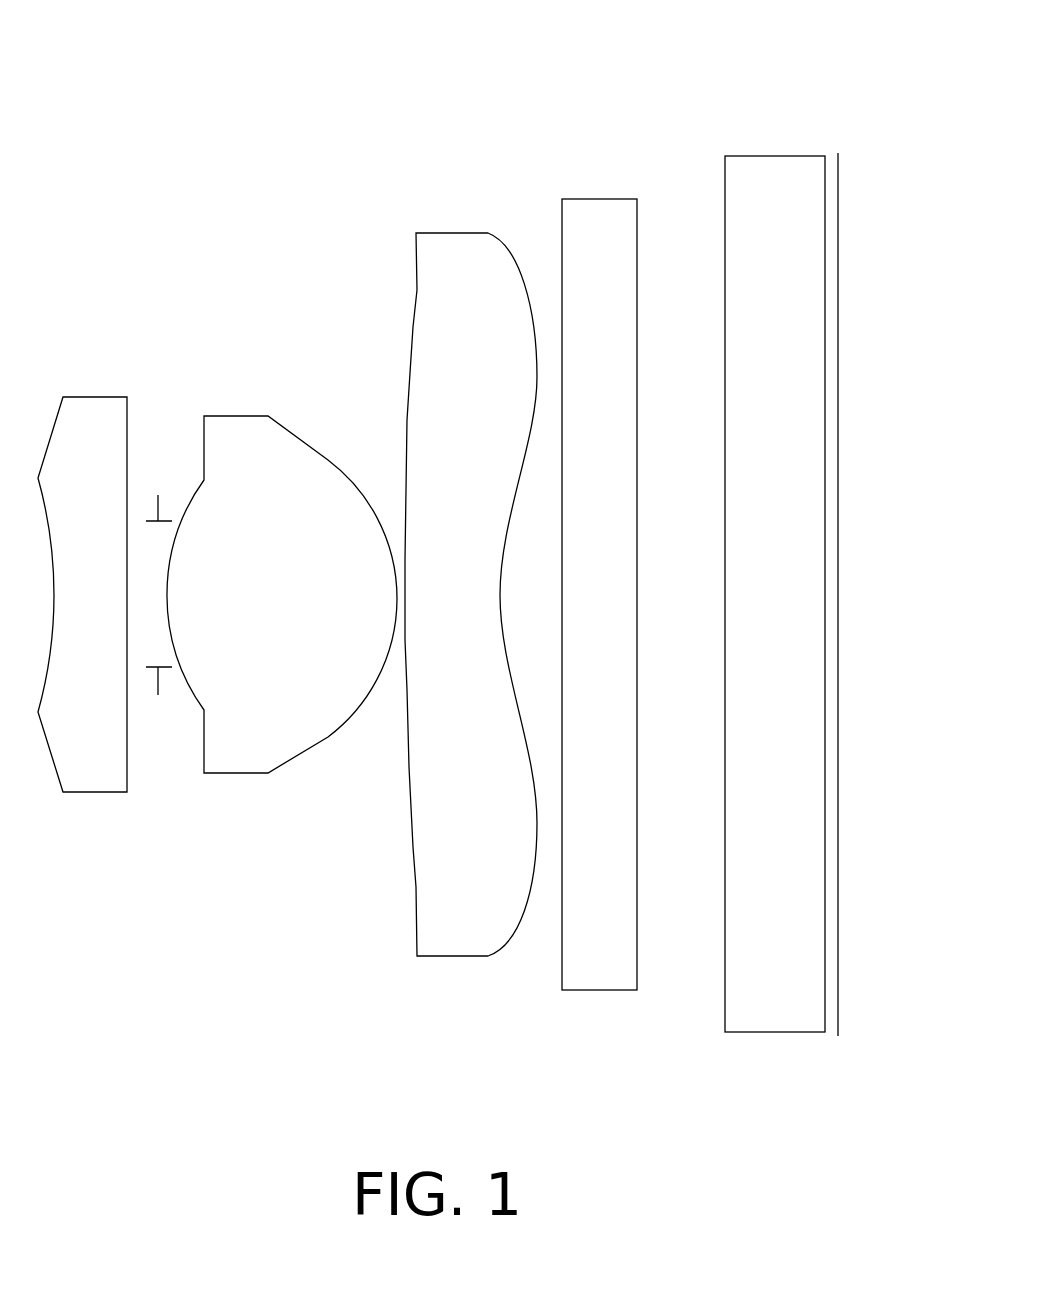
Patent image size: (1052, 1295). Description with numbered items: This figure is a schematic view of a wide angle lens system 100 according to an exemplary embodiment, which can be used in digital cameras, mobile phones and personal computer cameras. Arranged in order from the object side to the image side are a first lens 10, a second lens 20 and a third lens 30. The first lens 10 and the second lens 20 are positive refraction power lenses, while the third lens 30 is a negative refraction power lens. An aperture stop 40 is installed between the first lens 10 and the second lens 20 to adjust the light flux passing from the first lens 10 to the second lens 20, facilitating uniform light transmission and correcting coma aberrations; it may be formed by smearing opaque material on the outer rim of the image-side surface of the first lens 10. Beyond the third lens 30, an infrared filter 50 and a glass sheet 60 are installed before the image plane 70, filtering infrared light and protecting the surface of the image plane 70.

The wide angle lens system 100 is at (275, 80).
The first lens 10 is at (90, 413).
The second lens 20 is at (239, 440).
The third lens 30 is at (458, 267).
The aperture stop 40 is at (158, 495).
The infrared filter 50 is at (603, 223).
The glass sheet 60 is at (760, 178).
The image plane 70 is at (840, 240).